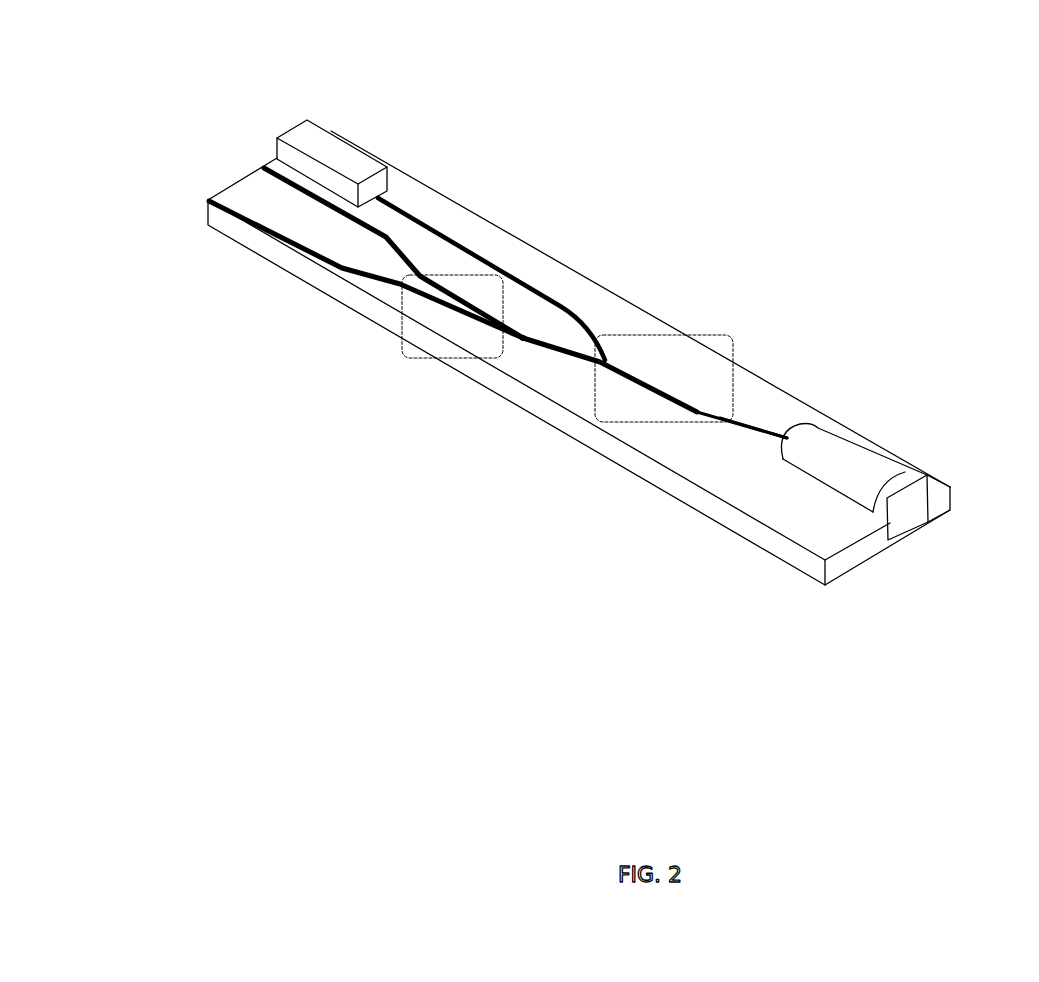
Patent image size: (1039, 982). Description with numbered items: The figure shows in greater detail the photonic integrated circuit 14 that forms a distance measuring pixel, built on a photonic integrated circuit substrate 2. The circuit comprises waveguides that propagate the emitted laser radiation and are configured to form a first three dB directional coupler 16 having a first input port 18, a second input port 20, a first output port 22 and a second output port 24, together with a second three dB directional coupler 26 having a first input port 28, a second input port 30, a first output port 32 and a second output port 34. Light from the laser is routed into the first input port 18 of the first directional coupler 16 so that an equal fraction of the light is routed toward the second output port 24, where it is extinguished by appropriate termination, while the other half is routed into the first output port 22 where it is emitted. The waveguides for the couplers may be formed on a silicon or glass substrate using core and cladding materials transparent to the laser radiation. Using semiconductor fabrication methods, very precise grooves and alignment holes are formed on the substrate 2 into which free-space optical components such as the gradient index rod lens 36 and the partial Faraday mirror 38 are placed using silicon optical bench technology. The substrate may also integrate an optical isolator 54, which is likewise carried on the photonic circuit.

The photonic integrated circuit substrate 2 is at (562, 391).
The photonic integrated circuit 14 is at (633, 328).
The first 3 dB directional coupler 16 is at (677, 358).
The first input port 18 is at (388, 192).
The second input port 20 is at (523, 338).
The first output port 22 is at (787, 437).
The second output port 24 is at (687, 422).
The second 3 dB directional coupler 26 is at (433, 322).
The first input port 28 is at (523, 338).
The second input port 30 is at (515, 345).
The first output port 32 is at (263, 165).
The second output port 34 is at (210, 198).
The GRIN rod lens 36 is at (843, 457).
The partial Faraday mirror 38 is at (925, 475).
The optical isolator 54 is at (333, 141).